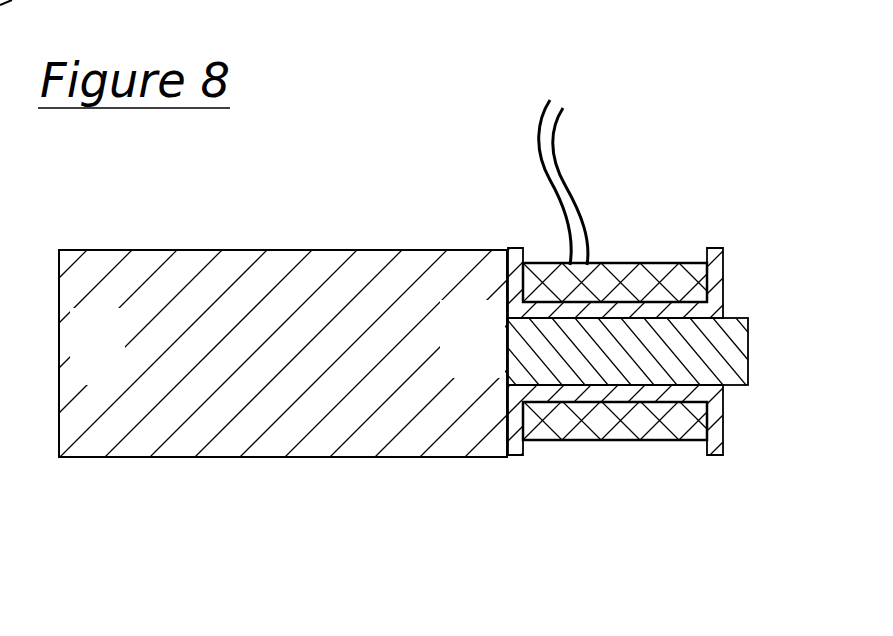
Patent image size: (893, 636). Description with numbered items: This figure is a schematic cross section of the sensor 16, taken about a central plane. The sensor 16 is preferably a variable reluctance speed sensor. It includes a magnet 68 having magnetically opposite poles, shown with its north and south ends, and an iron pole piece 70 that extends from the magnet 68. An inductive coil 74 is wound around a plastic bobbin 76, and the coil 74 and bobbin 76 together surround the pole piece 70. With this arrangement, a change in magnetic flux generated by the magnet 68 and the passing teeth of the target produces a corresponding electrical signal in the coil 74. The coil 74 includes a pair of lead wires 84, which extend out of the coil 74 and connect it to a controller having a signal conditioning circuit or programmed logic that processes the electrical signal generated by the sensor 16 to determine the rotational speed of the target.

The sensor 16 is at (247, 485).
The magnet 68 is at (275, 267).
The iron pole piece 70 is at (748, 350).
The inductive coil 74 is at (625, 263).
The plastic bobbin 76 is at (713, 277).
The lead wires 84 is at (452, 82).